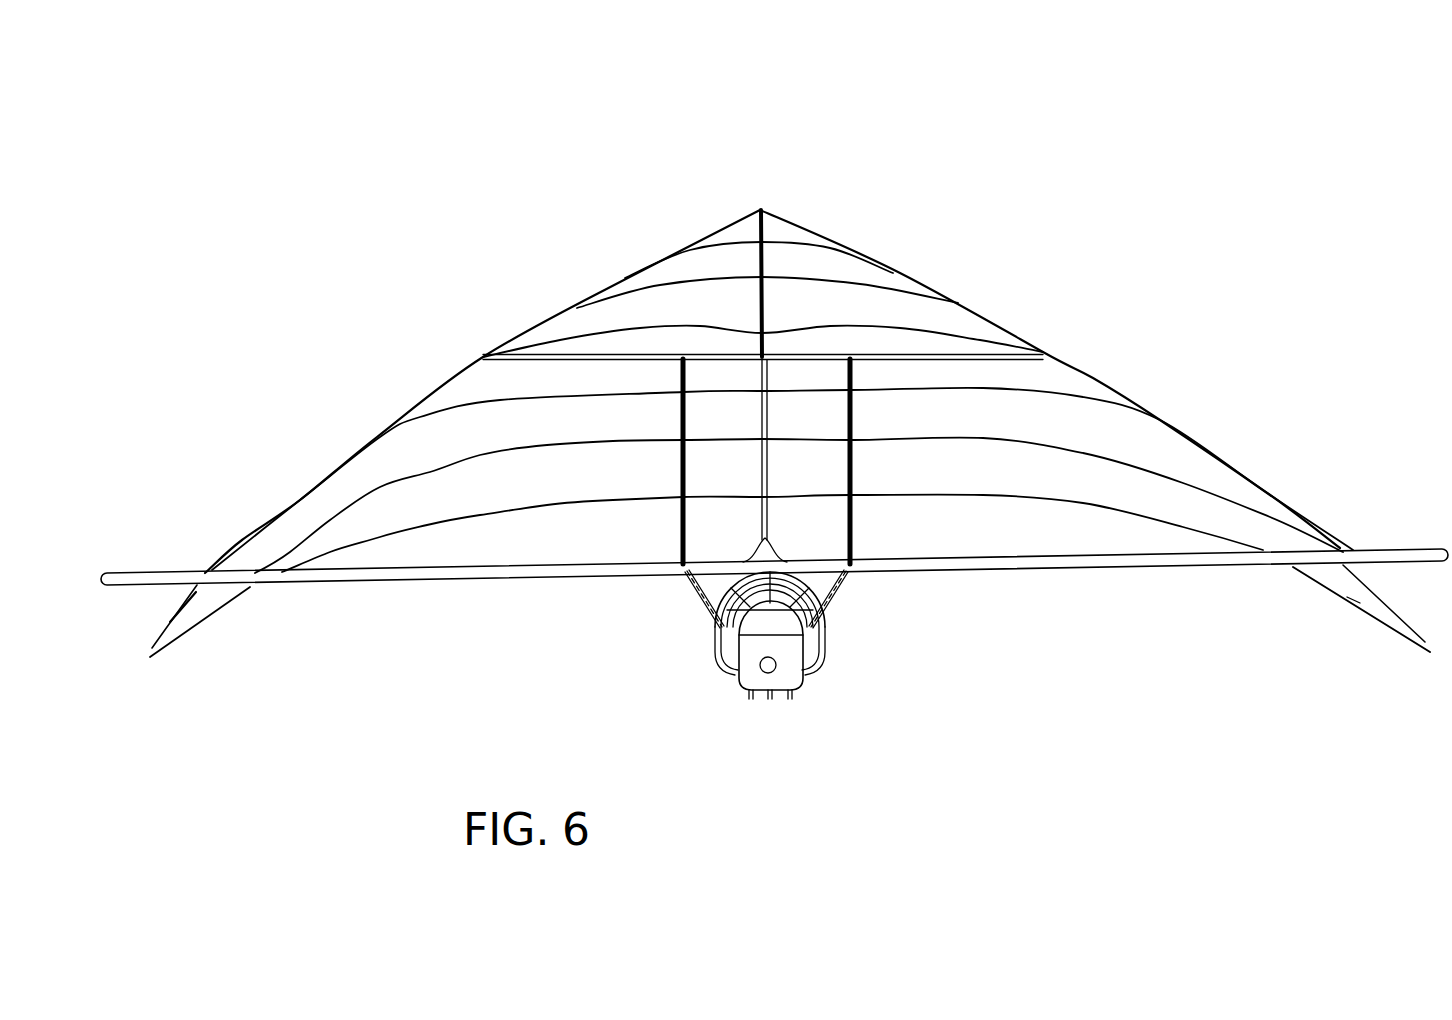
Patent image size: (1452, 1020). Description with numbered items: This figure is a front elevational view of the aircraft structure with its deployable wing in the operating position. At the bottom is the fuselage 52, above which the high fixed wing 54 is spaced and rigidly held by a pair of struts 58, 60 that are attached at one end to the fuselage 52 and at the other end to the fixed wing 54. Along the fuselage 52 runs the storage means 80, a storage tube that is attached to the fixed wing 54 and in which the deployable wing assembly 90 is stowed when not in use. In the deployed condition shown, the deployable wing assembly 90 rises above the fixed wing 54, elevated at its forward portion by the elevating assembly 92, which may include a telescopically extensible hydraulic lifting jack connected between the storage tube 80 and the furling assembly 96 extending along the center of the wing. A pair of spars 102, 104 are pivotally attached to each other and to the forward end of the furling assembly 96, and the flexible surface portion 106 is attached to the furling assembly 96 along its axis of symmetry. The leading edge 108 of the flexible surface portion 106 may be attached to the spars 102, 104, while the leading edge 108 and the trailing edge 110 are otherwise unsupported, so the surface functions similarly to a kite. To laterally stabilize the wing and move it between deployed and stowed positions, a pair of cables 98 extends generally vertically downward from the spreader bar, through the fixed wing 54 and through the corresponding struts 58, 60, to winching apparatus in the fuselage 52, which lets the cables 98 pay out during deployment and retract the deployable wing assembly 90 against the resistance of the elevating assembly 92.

The fuselage 52 is at (750, 668).
The fixed wing 54 is at (142, 585).
The strut 58 is at (840, 593).
The strut 60 is at (717, 620).
The storage means 80 is at (770, 552).
The deployable wing assembly 90 is at (936, 327).
The elevating assembly 92 is at (762, 465).
The furling assembly 96 is at (765, 292).
The cable 98 is at (555, 357).
The spar 102 is at (647, 263).
The spar 104 is at (1093, 372).
The flexible surface portion 106 is at (427, 455).
The leading edge 108 is at (725, 243).
The trailing edge 110 is at (427, 525).